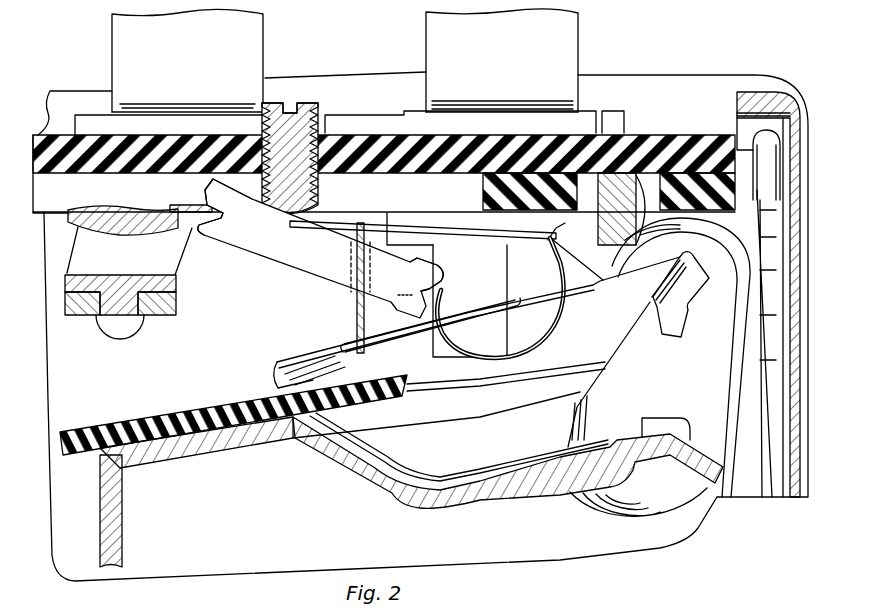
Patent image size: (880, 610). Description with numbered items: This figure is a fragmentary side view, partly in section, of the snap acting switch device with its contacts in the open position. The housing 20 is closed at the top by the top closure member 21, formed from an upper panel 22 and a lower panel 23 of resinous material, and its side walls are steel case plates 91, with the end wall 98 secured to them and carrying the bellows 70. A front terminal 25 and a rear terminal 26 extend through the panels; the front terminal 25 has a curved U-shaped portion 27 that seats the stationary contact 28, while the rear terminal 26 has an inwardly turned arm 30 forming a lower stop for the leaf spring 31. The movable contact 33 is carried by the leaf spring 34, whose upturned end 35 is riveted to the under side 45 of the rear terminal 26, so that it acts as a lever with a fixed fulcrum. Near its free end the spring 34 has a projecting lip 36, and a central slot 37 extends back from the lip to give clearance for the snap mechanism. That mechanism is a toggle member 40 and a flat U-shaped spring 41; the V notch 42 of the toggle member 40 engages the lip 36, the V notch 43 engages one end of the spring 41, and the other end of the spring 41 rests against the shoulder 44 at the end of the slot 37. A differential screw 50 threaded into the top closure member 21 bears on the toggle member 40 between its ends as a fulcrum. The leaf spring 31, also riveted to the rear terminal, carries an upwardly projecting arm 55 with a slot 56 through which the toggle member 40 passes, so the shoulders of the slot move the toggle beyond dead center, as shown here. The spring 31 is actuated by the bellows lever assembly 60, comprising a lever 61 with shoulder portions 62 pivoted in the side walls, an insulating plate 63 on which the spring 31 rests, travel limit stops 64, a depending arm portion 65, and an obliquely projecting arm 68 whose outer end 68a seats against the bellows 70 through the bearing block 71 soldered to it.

The housing 20 is at (710, 59).
The top closure member 21 is at (55, 140).
The upper panel 22 is at (692, 132).
The lower panel 23 is at (520, 204).
The front terminal 25 is at (112, 34).
The rear terminal 26 is at (426, 40).
The U-shaped portion 27 is at (178, 307).
The stationary contact 28 is at (178, 283).
The inwardly turned arm 30 is at (454, 356).
The leaf spring 31 is at (292, 360).
The contact 33 is at (72, 225).
The leaf spring 34 is at (560, 242).
The upturned end 35 is at (622, 172).
The projecting lip 36 is at (191, 206).
The slot 37 is at (423, 224).
The toggle member 40 is at (300, 262).
The U-shaped spring 41 is at (560, 326).
The V notch 42 is at (219, 212).
The V notch 43 is at (418, 276).
The shoulder 44 is at (555, 252).
The under side 45 is at (592, 165).
The differential screw 50 is at (305, 108).
The upwardly projecting arm 55 is at (355, 326).
The slot 56 is at (393, 232).
The bellows lever assembly 60 is at (176, 458).
The lever 61 is at (226, 452).
The shoulder portions 62 is at (685, 302).
The flat plate of insulating material 63 is at (112, 430).
The travel limit stops 64 is at (108, 330).
The depending arm portion 65 is at (122, 530).
The obliquely projecting arm 68 is at (520, 504).
The outer end 68a is at (720, 492).
The bellows 70 is at (745, 384).
The bearing block 71 is at (735, 401).
The case plates 91 is at (632, 80).
The end wall 98 is at (778, 95).